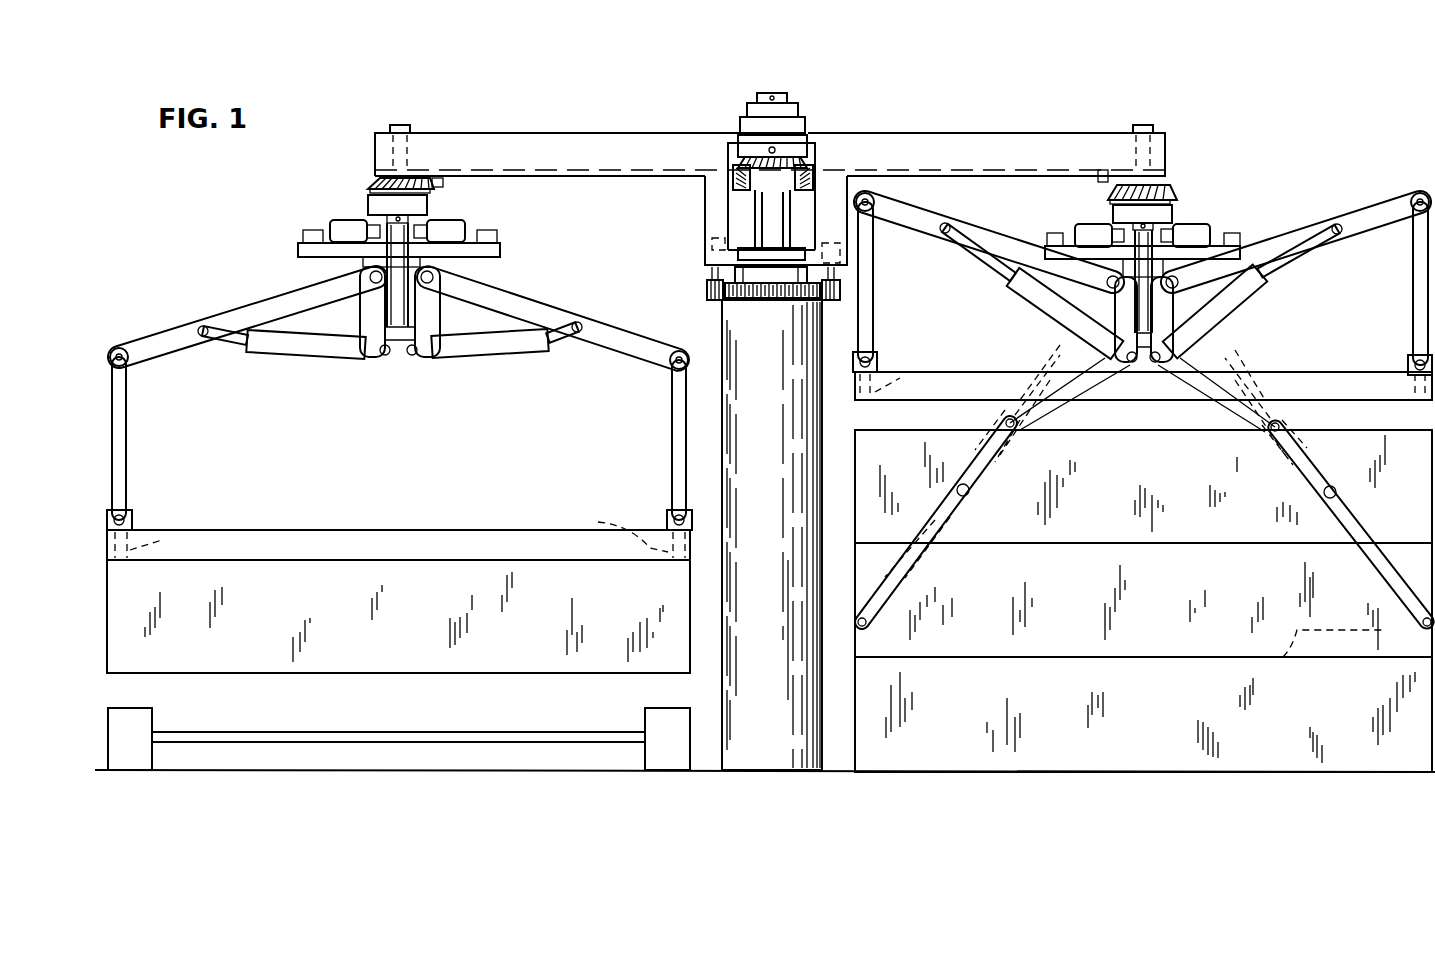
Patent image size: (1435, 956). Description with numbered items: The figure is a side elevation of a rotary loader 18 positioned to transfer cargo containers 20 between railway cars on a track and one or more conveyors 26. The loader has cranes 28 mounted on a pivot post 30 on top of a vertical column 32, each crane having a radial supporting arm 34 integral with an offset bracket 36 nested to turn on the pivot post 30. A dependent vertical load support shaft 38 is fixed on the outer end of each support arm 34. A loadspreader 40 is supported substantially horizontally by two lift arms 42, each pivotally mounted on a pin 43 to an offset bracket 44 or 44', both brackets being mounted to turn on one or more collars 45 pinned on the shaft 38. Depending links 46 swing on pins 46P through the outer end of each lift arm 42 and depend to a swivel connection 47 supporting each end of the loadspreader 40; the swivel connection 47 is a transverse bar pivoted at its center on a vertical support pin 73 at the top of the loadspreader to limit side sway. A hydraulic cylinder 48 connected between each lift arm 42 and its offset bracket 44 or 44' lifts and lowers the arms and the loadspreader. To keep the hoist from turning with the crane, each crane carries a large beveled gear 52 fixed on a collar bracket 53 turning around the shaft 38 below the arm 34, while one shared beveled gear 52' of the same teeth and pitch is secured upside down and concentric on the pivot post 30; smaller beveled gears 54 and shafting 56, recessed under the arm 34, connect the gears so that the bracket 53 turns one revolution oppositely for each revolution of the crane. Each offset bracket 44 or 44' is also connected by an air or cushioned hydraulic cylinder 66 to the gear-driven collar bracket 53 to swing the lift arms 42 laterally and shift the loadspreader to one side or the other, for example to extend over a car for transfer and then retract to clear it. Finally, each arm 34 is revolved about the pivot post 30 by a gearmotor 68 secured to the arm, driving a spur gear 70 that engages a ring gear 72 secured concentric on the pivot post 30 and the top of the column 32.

The rotary loader 18 is at (212, 220).
The cargo containers 20 is at (312, 676).
The conveyors 26 is at (292, 745).
The cranes 28 is at (652, 133).
The pivot post 30 is at (776, 96).
The vertical column 32 is at (720, 772).
The radial supporting arm 34 is at (740, 120).
The offset bracket 36 is at (706, 228).
The dependent vertical load support shaft 38 is at (410, 108).
The loadspreader 40 is at (346, 530).
The lift arms 42 is at (188, 333).
The pin 43 is at (368, 278).
The offset bracket 44 is at (822, 299).
The offset bracket 44' is at (742, 332).
The collars 45 is at (426, 212).
The depending links 46 is at (128, 465).
The pins 46P is at (130, 366).
The swivel connection 47 is at (132, 518).
The hydraulic cylinder 48 is at (316, 358).
The large beveled gear 52 is at (770, 174).
The shared beveled gear 52' is at (806, 168).
The collar bracket 53 is at (368, 200).
The smaller beveled gears 54 is at (432, 162).
The shafting 56 is at (582, 178).
The air or cushioned hydraulic cylinder 66 is at (332, 222).
The gearmotor 68 is at (712, 250).
The spur gear 70 is at (707, 290).
The ring gear 72 is at (735, 300).
The vertical support pin 73 is at (178, 529).